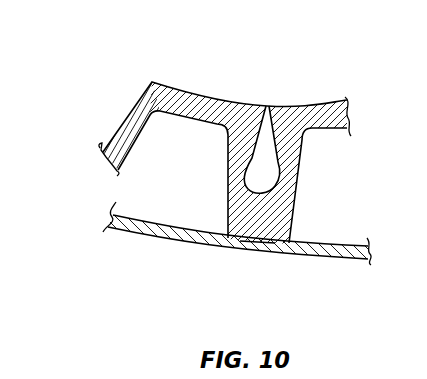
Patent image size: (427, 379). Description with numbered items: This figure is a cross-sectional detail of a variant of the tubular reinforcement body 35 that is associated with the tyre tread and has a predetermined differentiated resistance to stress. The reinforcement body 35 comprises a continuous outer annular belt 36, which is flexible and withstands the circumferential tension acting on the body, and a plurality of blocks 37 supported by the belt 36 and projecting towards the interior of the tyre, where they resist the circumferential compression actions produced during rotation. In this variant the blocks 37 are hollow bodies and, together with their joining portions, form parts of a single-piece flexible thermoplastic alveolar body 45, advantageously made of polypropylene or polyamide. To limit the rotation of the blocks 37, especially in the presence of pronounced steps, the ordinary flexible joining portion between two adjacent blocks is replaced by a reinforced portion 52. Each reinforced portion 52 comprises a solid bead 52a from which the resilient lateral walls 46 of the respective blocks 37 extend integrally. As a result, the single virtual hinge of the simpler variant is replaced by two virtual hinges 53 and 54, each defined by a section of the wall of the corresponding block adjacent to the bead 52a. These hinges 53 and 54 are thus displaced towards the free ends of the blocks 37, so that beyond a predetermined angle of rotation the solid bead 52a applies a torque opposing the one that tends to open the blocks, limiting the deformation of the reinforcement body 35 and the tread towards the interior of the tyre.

The tubular reinforcement body 35 is at (327, 97).
The continuous outer annular belt 36 is at (165, 231).
The blocks 37 is at (226, 95).
The alveolar body 45 is at (98, 130).
The lateral walls 46 is at (135, 98).
The reinforced portion 52 is at (316, 221).
The solid bead 52a is at (258, 244).
The virtual hinge 53 is at (201, 161).
The virtual hinge 54 is at (299, 188).